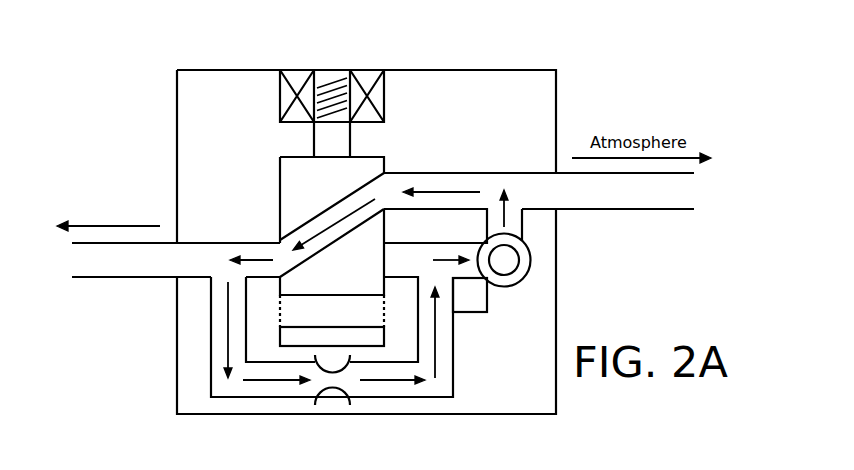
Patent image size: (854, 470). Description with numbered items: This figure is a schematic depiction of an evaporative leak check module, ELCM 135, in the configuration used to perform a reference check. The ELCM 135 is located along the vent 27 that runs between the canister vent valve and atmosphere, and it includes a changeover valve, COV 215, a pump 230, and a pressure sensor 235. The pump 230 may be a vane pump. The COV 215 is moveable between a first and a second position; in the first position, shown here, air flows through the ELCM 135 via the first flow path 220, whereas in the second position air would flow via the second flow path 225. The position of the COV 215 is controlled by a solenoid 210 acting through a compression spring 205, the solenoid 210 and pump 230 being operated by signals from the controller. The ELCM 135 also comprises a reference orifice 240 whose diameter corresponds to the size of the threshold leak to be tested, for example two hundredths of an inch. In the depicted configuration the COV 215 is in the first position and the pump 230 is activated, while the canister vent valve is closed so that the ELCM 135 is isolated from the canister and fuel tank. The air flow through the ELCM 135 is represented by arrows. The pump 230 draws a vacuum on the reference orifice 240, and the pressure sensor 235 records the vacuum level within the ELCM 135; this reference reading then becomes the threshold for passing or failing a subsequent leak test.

The vent 27 is at (126, 277).
The evaporative leak check module (ELCM) 135 is at (212, 70).
The compression spring 205 is at (332, 70).
The solenoid 210 is at (367, 70).
The changeover valve (COV) 215 is at (292, 157).
The first flow path 220 is at (337, 203).
The second flow path 225 is at (377, 293).
The pump 230 is at (527, 277).
The pressure sensor 235 is at (487, 310).
The reference orifice 240 is at (343, 383).